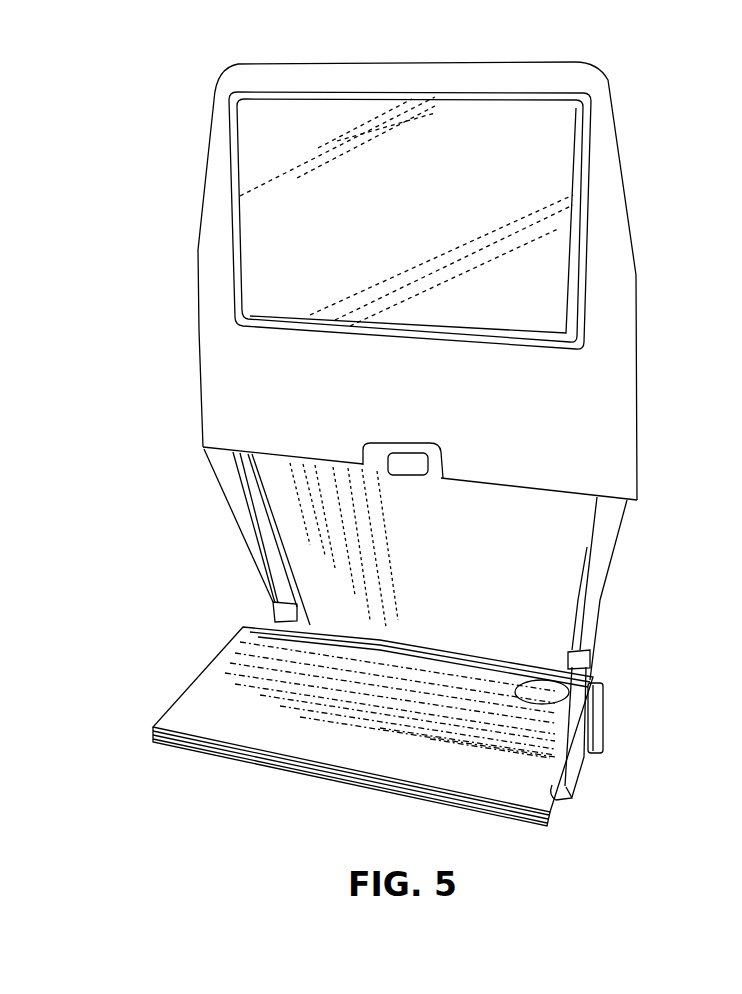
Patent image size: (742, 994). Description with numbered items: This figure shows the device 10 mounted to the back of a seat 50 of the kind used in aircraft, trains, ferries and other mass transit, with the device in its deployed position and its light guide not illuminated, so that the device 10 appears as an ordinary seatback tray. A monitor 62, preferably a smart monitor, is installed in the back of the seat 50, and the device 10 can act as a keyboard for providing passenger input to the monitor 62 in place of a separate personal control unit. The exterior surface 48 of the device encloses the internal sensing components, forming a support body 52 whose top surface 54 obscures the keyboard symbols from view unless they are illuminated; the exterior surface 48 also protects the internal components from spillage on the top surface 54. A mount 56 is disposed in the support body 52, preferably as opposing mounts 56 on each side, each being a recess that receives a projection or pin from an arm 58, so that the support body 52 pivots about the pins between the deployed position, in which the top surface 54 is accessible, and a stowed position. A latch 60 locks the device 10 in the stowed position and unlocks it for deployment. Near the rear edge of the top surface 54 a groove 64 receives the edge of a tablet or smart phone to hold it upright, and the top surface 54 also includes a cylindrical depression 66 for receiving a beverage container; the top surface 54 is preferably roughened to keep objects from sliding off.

The device 10 is at (147, 750).
The exterior surface 48 is at (196, 690).
The seat 50 is at (637, 263).
The support body 52 is at (558, 810).
The top surface 54 is at (429, 686).
The mount 56 is at (237, 607).
The arm 58 is at (604, 718).
The latch 60 is at (427, 468).
The monitor 62 is at (390, 198).
The groove 64 is at (442, 650).
The cylindrical depression 66 is at (542, 693).